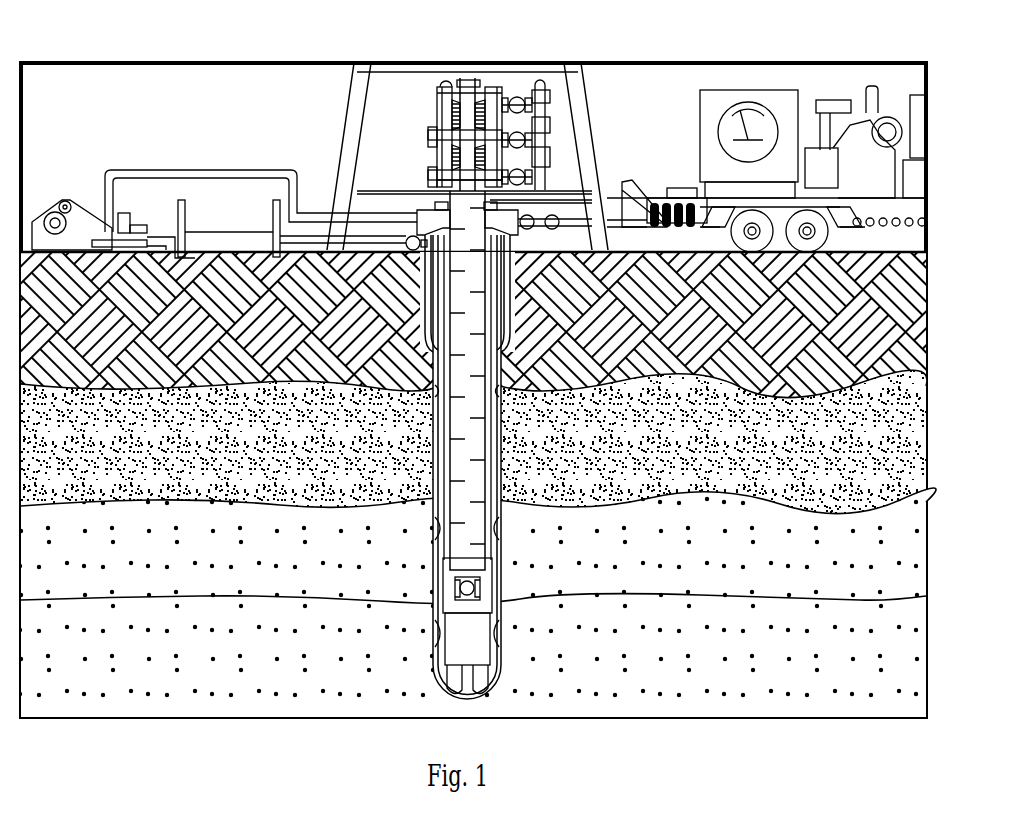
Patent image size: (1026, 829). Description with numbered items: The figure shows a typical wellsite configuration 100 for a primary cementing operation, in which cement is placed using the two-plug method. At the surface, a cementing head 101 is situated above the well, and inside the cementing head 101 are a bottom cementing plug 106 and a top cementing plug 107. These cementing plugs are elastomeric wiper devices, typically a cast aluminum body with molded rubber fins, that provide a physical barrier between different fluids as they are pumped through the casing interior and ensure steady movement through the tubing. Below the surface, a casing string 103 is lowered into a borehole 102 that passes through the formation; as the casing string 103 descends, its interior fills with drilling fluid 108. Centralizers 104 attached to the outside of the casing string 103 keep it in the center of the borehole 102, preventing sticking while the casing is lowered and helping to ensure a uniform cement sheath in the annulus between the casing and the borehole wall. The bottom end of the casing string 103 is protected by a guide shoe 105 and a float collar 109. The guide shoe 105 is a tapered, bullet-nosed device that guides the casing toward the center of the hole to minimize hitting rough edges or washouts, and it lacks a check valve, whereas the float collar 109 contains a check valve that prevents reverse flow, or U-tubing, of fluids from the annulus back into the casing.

The wellsite configuration 100 is at (845, 39).
The cementing head 101 is at (465, 105).
The borehole 102 is at (517, 362).
The casing string 103 is at (491, 448).
The centralizers 104 is at (432, 524).
The guide shoe 105 is at (488, 672).
The bottom cementing plug 106 is at (448, 158).
The top cementing plug 107 is at (452, 113).
The drilling fluid 108 is at (471, 493).
The float collar 109 is at (488, 588).